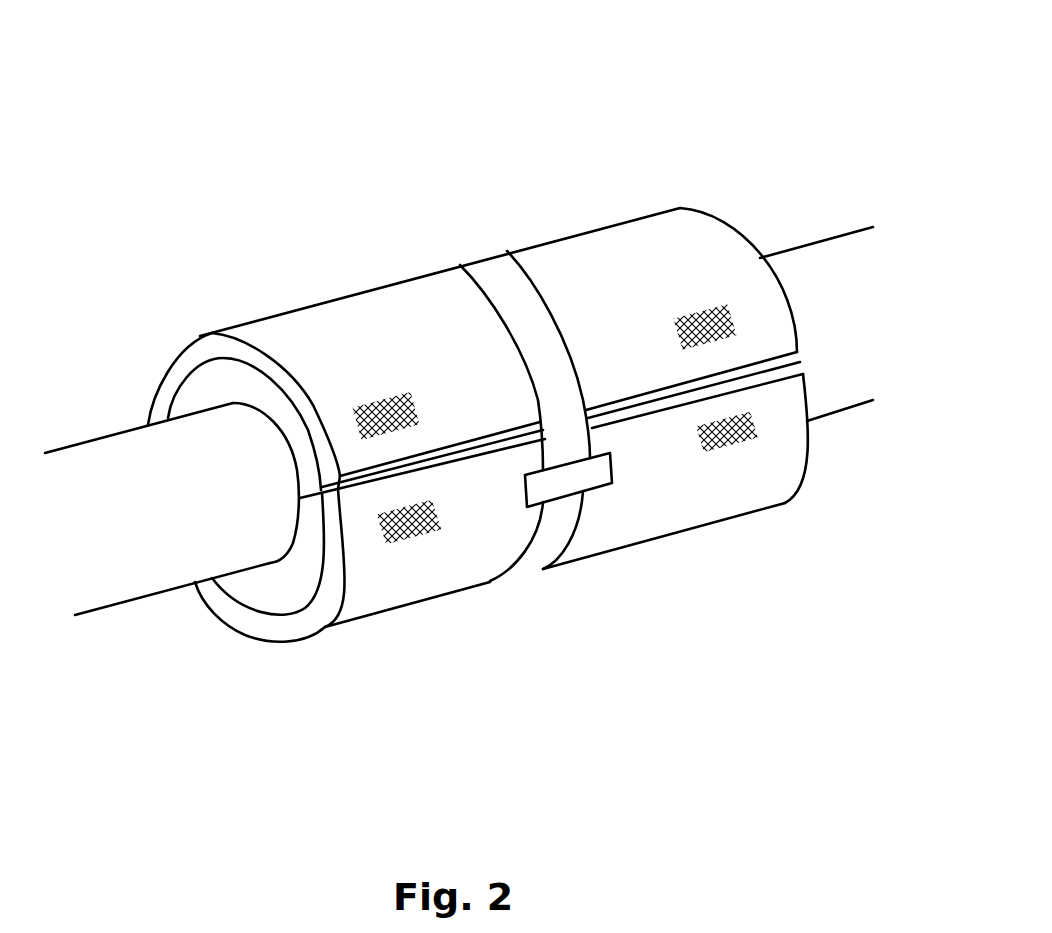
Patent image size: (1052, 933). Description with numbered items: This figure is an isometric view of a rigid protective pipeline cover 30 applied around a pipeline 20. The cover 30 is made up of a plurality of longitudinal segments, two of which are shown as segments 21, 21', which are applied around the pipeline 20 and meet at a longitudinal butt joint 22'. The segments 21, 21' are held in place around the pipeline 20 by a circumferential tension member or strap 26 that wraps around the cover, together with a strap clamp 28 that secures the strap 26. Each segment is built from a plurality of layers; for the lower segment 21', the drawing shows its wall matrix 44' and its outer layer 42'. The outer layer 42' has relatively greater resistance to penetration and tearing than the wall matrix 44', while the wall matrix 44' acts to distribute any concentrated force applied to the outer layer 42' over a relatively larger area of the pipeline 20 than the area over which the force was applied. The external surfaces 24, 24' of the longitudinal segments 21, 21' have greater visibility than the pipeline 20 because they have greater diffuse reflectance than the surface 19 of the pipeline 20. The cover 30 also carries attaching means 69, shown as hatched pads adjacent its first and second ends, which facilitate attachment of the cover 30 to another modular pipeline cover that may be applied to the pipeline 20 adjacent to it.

The surface of pipeline 19 is at (107, 463).
The pipeline 20 is at (101, 612).
The longitudinal segment 21 is at (472, 349).
The longitudinal segment 21' is at (555, 565).
The longitudinal butt joint 22' is at (596, 394).
The external surface 24 is at (708, 260).
The external surface 24' is at (802, 460).
The circumferential tension member (strap) 26 is at (517, 277).
The strap clamp 28 is at (612, 473).
The rigid protective pipeline cover 30 is at (613, 96).
The outer layer 42' is at (305, 585).
The wall matrix 44' is at (266, 594).
The attaching means 69 is at (372, 397).